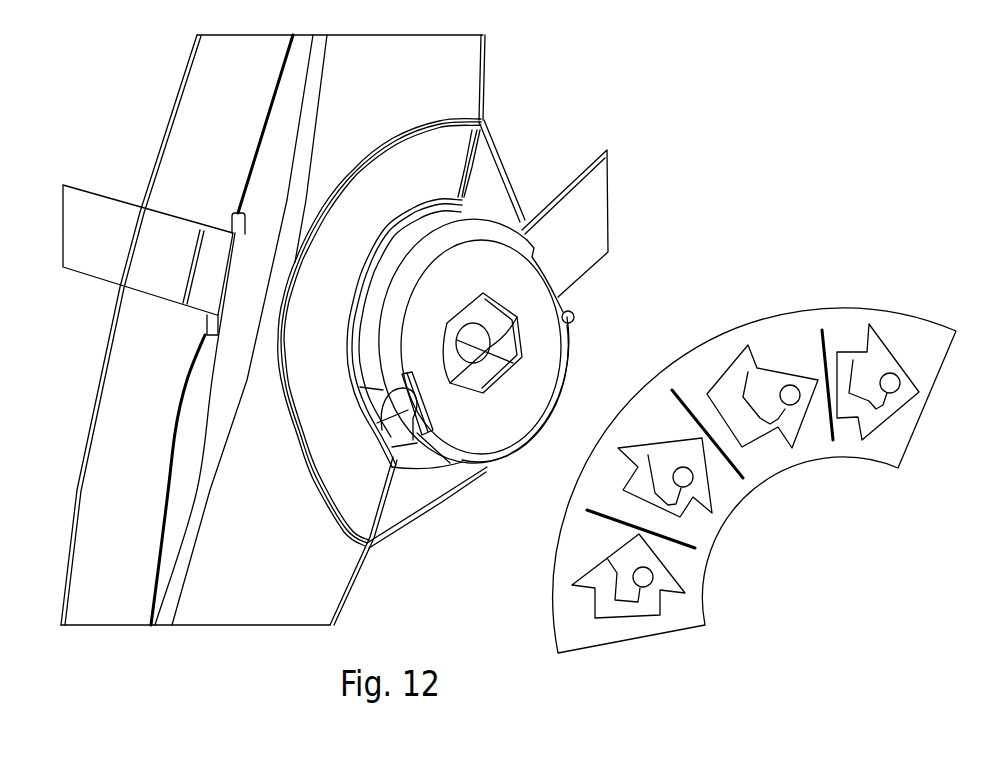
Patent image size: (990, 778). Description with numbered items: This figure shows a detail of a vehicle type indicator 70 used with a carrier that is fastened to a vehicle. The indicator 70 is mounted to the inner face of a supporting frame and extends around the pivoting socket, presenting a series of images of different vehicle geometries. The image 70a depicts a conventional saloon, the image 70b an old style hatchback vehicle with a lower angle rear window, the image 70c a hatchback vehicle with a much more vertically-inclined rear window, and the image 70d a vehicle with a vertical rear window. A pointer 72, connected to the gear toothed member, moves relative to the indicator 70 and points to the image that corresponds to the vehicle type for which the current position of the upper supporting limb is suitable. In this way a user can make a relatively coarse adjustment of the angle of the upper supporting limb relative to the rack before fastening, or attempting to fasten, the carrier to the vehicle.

The vehicle type indicator 70 is at (390, 210).
The image of a conventional saloon 70a is at (593, 538).
The image of an old style hatchback vehicle 70b is at (700, 527).
The image of a hatchback vehicle with a more vertically-inclined rear window 70c is at (718, 357).
The image of a vehicle with a vertical rear window 70d is at (843, 333).
The pointer 72 is at (380, 430).